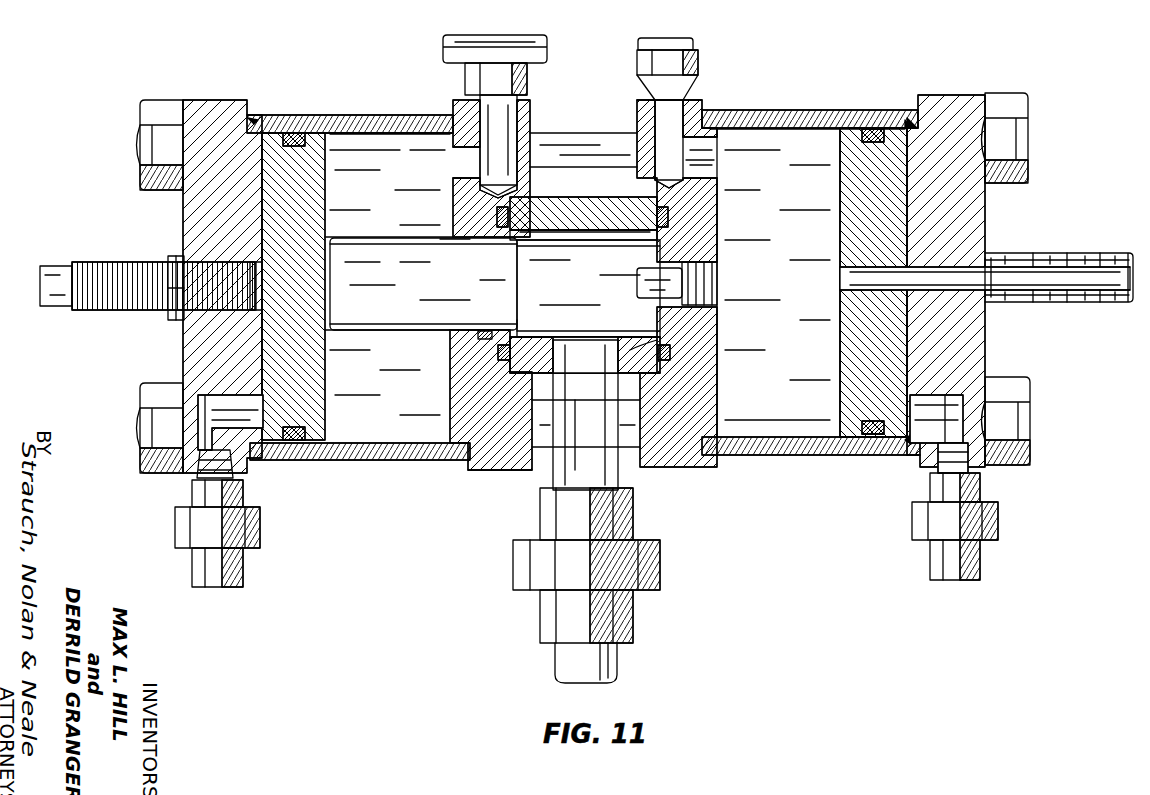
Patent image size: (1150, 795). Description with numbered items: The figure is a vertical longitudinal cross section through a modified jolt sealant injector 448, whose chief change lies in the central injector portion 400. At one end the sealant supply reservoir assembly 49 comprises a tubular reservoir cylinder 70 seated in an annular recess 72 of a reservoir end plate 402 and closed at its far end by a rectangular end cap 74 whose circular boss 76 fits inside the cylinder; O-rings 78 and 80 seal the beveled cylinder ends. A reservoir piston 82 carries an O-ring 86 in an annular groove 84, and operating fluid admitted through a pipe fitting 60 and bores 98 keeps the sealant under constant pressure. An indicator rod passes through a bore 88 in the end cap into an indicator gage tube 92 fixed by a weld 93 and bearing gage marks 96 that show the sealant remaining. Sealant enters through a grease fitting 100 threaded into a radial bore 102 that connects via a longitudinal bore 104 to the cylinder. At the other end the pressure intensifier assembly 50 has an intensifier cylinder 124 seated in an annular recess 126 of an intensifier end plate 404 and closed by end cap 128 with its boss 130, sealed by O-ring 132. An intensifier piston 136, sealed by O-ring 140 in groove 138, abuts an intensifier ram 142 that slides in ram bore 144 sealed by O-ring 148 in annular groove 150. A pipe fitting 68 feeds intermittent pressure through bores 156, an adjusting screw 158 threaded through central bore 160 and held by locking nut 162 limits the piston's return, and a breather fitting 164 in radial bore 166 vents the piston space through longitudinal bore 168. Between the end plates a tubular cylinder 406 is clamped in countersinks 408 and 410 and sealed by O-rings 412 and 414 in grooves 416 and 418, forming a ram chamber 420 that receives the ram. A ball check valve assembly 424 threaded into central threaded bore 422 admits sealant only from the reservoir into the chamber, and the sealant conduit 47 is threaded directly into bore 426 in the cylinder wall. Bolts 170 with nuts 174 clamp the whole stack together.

The sealant conduit 47 is at (620, 660).
The sealant supply reservoir assembly 49 is at (822, 100).
The pressure intensifier assembly 50 is at (306, 105).
The pipe fitting 60 is at (993, 526).
The pipe fitting 68 is at (258, 530).
The reservoir cylinder 70 is at (785, 108).
The annular recess 72 is at (700, 108).
The end cap 74 is at (958, 225).
The circular boss 76 is at (910, 122).
The O-ring 78 is at (716, 445).
The O-ring 80 is at (915, 120).
The reservoir piston 82 is at (880, 189).
The annular groove 84 is at (866, 460).
The O-ring 86 is at (872, 128).
The bore 88 is at (952, 290).
The indicator gage tube 92 is at (1108, 303).
The weld 93 is at (990, 305).
The gage marks 96 is at (1040, 256).
The bores 98 is at (938, 392).
The grease fitting 100 is at (695, 65).
The radial bore 102 is at (720, 152).
The longitudinally extending bore 104 is at (720, 172).
The intensifier cylinder 124 is at (388, 114).
The annular recess 126 is at (462, 108).
The end cap 128 is at (238, 185).
The circular boss 130 is at (272, 460).
The O-ring 132 is at (256, 122).
The intensifier piston 136 is at (309, 230).
The annular groove 138 is at (292, 405).
The O-ring 140 is at (345, 158).
The intensifier ram 142 is at (388, 310).
The ram bore 144 is at (455, 240).
The O-ring 148 is at (488, 240).
The annular groove 150 is at (520, 325).
The bores 156 is at (210, 418).
The adjusting screw 158 is at (96, 262).
The central bore 160 is at (178, 256).
The locking nut 162 is at (174, 320).
The breather fitting 164 is at (508, 40).
The radial bore 166 is at (510, 140).
The longitudinal bore 168 is at (457, 162).
The bolts 170 is at (138, 150).
The nuts 174 is at (150, 116).
The central injector portion 400 is at (648, 500).
The reservoir end plate 402 is at (710, 249).
The intensifier end plate 404 is at (503, 458).
The tubular cylinder 406 is at (565, 238).
The circular countersink 408 is at (658, 205).
The circular countersink 410 is at (512, 210).
The O-ring 412 is at (636, 238).
The O-ring 414 is at (585, 186).
The annular groove 416 is at (668, 342).
The annular groove 418 is at (458, 403).
The ram chamber 420 is at (580, 303).
The central threaded bore 422 is at (715, 268).
The ball check valve assembly 424 is at (640, 282).
The bore 426 is at (565, 350).
The jolt sealant injector 448 is at (126, 70).